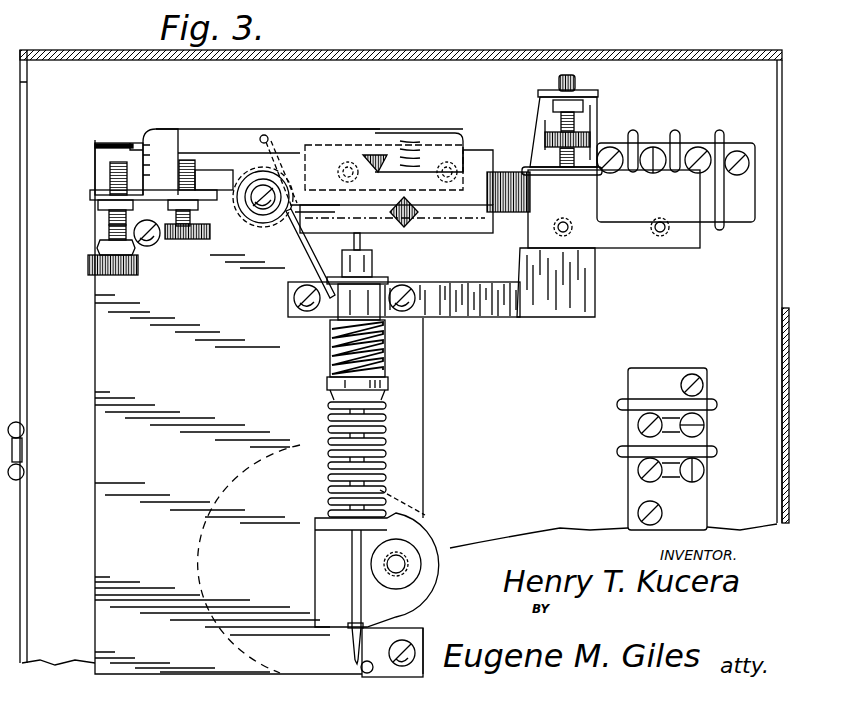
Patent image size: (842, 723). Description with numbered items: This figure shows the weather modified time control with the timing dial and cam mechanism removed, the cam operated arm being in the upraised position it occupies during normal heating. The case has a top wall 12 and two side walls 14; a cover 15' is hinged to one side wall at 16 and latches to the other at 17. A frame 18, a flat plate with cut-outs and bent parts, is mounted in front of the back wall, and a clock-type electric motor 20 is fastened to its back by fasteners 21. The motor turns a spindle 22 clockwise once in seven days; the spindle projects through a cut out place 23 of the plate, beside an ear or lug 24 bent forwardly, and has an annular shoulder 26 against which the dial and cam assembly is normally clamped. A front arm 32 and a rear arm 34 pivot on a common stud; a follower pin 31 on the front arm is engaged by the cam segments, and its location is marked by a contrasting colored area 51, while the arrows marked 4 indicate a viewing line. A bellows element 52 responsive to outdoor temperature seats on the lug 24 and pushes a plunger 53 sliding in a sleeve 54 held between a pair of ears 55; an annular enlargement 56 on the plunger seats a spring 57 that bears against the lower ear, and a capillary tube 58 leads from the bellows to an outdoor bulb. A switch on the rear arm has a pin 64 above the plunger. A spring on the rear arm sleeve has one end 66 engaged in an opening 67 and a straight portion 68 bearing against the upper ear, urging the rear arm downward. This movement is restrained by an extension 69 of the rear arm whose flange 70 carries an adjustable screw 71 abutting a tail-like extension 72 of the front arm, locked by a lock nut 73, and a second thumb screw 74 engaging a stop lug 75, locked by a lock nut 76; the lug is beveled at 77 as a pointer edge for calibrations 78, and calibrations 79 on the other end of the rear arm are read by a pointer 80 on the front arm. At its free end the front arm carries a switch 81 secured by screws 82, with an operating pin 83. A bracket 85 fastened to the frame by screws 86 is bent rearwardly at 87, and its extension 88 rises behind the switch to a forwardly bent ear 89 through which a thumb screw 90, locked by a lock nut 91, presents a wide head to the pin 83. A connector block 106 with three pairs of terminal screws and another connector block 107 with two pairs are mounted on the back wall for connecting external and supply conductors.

The needle shaft / indicator 4 is at (352, 218).
The top wall 12 is at (546, 51).
The side walls 14 is at (27, 377).
The cover 15' is at (438, 14).
The hinge 16 is at (781, 328).
The latching engagement 17 is at (17, 452).
The frame 18 is at (102, 466).
The electric motor 20 is at (200, 538).
The fasteners 21 is at (390, 458).
The spindle 22 is at (405, 560).
The cut out place 23 is at (333, 627).
The ear or lug 24 is at (427, 520).
The annular shoulder 26 is at (391, 580).
The follower pin 31 is at (417, 207).
The front arm 32 is at (317, 150).
The rear arm 34 is at (385, 131).
The contrasting colored area 51 is at (403, 202).
The bellows element 52 is at (383, 422).
The plunger 53 is at (373, 267).
The sleeve 54 is at (342, 305).
The ears 55 is at (388, 280).
The annular enlargement 56 is at (382, 382).
The spring 57 is at (335, 365).
The capillary tube 58 is at (357, 663).
The switch pin 64 is at (365, 240).
The spring end 66 is at (262, 135).
The opening 67 is at (272, 140).
The straight spring portion 68 is at (300, 248).
The extension 69 is at (200, 128).
The flange 70 is at (92, 193).
The adjustable screw 71 is at (195, 240).
The tail-like extension 72 is at (188, 160).
The lock nut 73 is at (206, 203).
The adjustable thumb screw 74 is at (107, 225).
The stop lug 75 is at (102, 140).
The lock nut 76 is at (100, 208).
The bevel 77 is at (133, 142).
The calibrations 78 is at (150, 128).
The calibrations 79 is at (412, 132).
The pointer 80 is at (377, 147).
The switch 81 is at (687, 252).
The screws 82 is at (652, 223).
The operating pin 83 is at (552, 160).
The bracket 85 is at (290, 310).
The screws 86 is at (294, 298).
The rearward bend 87 is at (482, 318).
The extension 88 is at (597, 118).
The forwardly bent ear 89 is at (598, 90).
The thumb screw 90 is at (558, 113).
The lock nut 91 is at (558, 100).
The connector block 106 is at (696, 140).
The connector block 107 is at (626, 431).